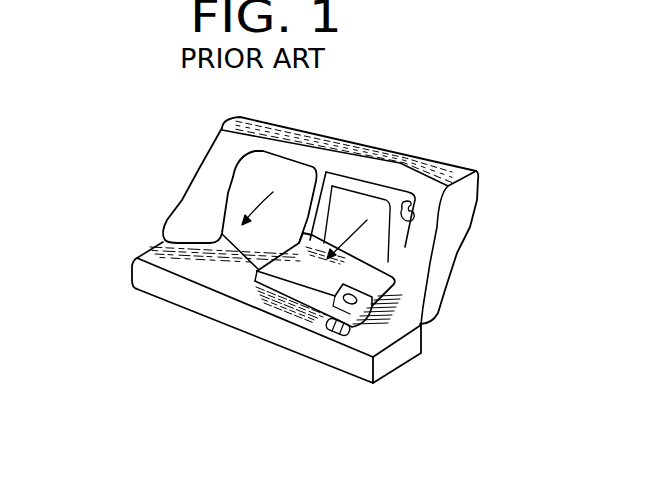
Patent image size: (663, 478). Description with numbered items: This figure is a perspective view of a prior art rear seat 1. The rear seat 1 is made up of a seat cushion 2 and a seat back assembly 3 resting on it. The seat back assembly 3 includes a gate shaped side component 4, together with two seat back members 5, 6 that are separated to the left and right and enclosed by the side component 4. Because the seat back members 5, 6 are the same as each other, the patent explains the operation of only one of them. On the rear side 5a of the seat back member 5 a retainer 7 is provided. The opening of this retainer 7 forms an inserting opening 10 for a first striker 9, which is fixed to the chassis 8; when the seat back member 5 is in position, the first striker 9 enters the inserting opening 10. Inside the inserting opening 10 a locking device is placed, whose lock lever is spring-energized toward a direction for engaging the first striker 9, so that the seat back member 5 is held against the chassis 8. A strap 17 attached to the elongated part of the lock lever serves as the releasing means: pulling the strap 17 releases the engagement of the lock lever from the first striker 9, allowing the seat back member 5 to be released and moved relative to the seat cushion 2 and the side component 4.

The rear seat 1 is at (140, 207).
The seat cushion 2 is at (152, 286).
The seat back assembly 3 is at (454, 166).
The side component 4 is at (207, 170).
The seat back member 5 is at (372, 306).
The rear side 5a is at (373, 277).
The seat back member 6 is at (303, 177).
The retainer 7 is at (316, 298).
The chassis 8 is at (378, 193).
The first striker 9 is at (416, 211).
The inserting opening 10 is at (351, 305).
The strap 17 is at (333, 318).